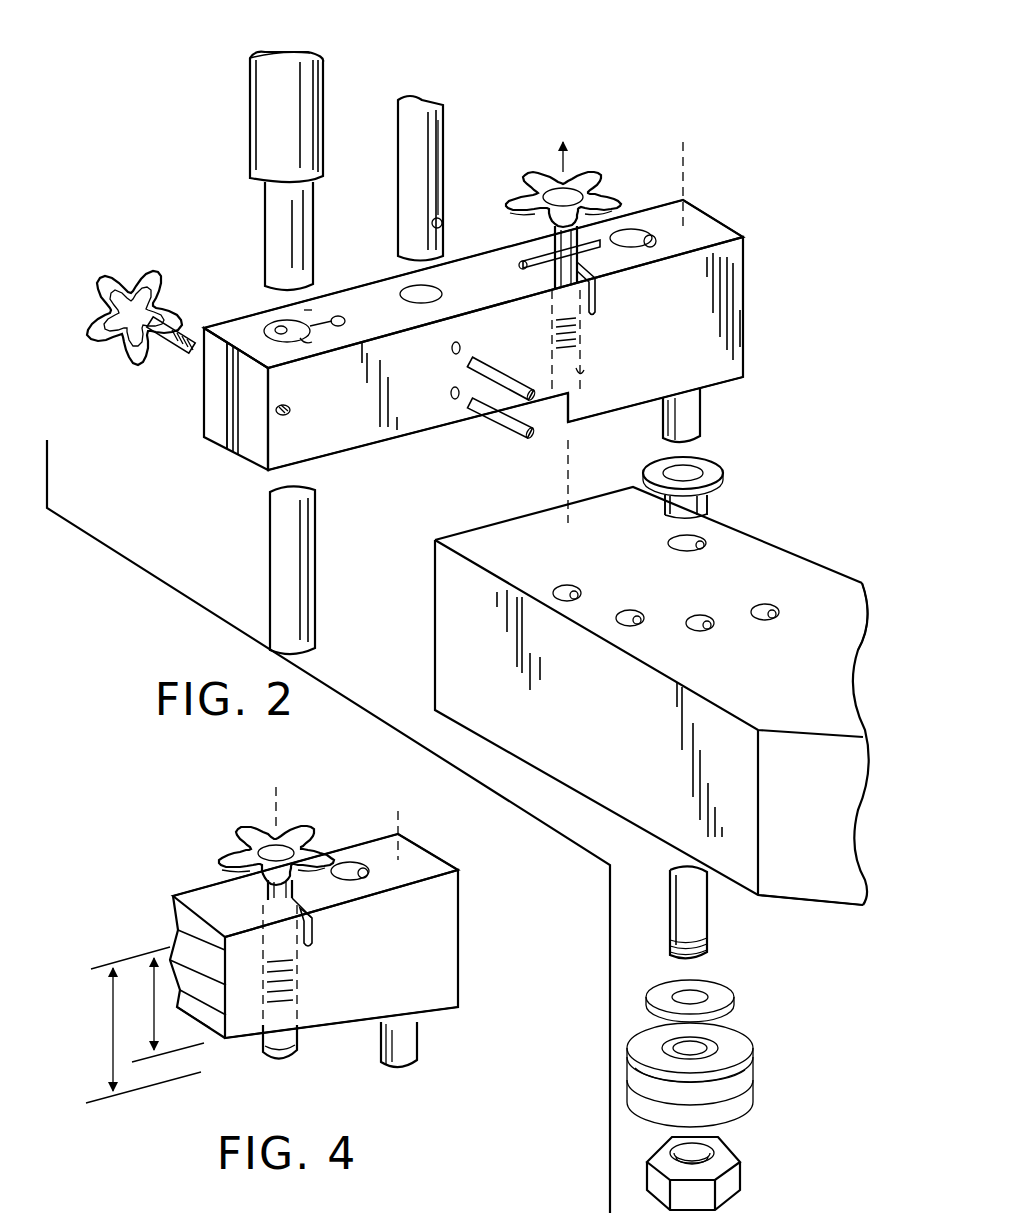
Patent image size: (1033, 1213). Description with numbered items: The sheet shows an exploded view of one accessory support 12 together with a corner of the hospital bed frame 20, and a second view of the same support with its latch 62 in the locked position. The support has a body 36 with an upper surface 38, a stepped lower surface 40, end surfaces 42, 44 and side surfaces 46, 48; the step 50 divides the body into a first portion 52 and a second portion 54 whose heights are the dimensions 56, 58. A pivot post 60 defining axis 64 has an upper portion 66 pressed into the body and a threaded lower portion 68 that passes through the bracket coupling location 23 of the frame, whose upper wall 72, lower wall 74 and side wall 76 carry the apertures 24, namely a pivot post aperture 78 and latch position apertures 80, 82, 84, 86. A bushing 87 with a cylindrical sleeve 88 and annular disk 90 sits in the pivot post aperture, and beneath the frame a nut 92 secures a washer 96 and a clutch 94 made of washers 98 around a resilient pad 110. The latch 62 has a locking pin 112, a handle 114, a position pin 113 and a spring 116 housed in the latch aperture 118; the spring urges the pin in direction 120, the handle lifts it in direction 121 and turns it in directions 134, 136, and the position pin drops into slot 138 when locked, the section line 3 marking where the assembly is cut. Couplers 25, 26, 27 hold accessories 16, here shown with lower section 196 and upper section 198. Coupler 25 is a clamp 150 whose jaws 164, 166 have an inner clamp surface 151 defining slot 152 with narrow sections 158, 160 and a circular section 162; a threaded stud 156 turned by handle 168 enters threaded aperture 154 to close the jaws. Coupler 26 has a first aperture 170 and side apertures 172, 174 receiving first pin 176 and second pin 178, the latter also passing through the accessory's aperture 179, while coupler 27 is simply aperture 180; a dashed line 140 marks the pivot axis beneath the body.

In FIG. 2, the section line 3- 3 is at (178, 362).
In FIG. 2, the accessory support 12 is at (697, 72).
In FIG. 4, the accessory support 12 is at (493, 937).
In FIG. 2, the accessory 16 is at (318, 118).
In FIG. 2, the frame 20 is at (822, 487).
In FIG. 2, the bracket coupling location 23 is at (857, 577).
In FIG. 2, the apertures 24 is at (707, 543).
In FIG. 2, the coupler 25 is at (225, 278).
In FIG. 2, the coupler 26 is at (386, 252).
In FIG. 2, the coupler 27 is at (637, 193).
In FIG. 4, the coupler 27 is at (355, 815).
In FIG. 2, the body 36 is at (673, 312).
In FIG. 4, the body 36 is at (428, 915).
In FIG. 2, the upper surface 38 is at (692, 207).
In FIG. 4, the upper surface 38 is at (192, 897).
In FIG. 2, the lower surface 40 is at (367, 425).
In FIG. 4, the lower surface 40 is at (256, 1031).
In FIG. 2, the end surface 42 is at (204, 437).
In FIG. 2, the end surface 44 is at (748, 237).
In FIG. 4, the end surface 44 is at (433, 853).
In FIG. 2, the side surface 46 is at (423, 422).
In FIG. 2, the side surface 48 is at (226, 324).
In FIG. 4, the side surface 48 is at (345, 844).
In FIG. 2, the step 50 is at (560, 412).
In FIG. 4, the step 50 is at (277, 1059).
In FIG. 2, the first portion 52 is at (607, 398).
In FIG. 4, the first portion 52 is at (445, 990).
In FIG. 2, the second portion 54 is at (474, 262).
In FIG. 4, the height dimension 56 is at (148, 983).
In FIG. 4, the height dimension 58 is at (113, 1031).
In FIG. 2, the pivot post 60 is at (695, 408).
In FIG. 4, the pivot post 60 is at (417, 1049).
In FIG. 2, the latch 62 is at (532, 148).
In FIG. 4, the latch 62 is at (239, 817).
In FIG. 2, the axis 64 is at (683, 148).
In FIG. 4, the axis 64 is at (398, 811).
In FIG. 2, the upper portion 66 is at (697, 420).
In FIG. 4, the upper portion 66 is at (381, 1062).
In FIG. 2, the threaded lower portion 68 is at (670, 943).
In FIG. 2, the upper wall 72 is at (487, 537).
In FIG. 2, the lower wall 74 is at (803, 902).
In FIG. 2, the side wall 76 is at (457, 670).
In FIG. 2, the pivot post aperture 78 is at (668, 545).
In FIG. 2, the first latch position aperture 80 is at (770, 624).
In FIG. 2, the second latch position aperture 82 is at (702, 620).
In FIG. 2, the third latch position aperture 84 is at (633, 615).
In FIG. 2, the fourth latch position aperture 86 is at (563, 587).
In FIG. 2, the bushing 87 is at (732, 472).
In FIG. 2, the cylindrical sleeve 88 is at (710, 502).
In FIG. 2, the annular disk 90 is at (660, 473).
In FIG. 2, the nut 92 is at (735, 1180).
In FIG. 2, the clutch 94 is at (773, 1065).
In FIG. 2, the washer 96 is at (727, 997).
In FIG. 2, the washers 98 is at (742, 1047).
In FIG. 2, the resilient pad 110 is at (747, 1077).
In FIG. 2, the locking pin 112 is at (553, 312).
In FIG. 4, the locking pin 112 is at (263, 936).
In FIG. 2, the position pin 113 is at (522, 266).
In FIG. 4, the position pin 113 is at (309, 922).
In FIG. 2, the handle 114 is at (592, 188).
In FIG. 4, the handle 114 is at (225, 851).
In FIG. 2, the spring 116 is at (590, 336).
In FIG. 4, the spring 116 is at (300, 980).
In FIG. 2, the latch aperture 118 is at (586, 370).
In FIG. 4, the direction 120 is at (278, 850).
In FIG. 2, the direction 121 is at (555, 160).
In FIG. 2, the direction 134 is at (653, 100).
In FIG. 2, the direction 136 is at (593, 95).
In FIG. 2, the slot 138 is at (596, 290).
In FIG. 4, the slot 138 is at (312, 925).
In FIG. 2, the axis line 140 is at (567, 468).
In FIG. 4, the axis line 140 is at (276, 805).
In FIG. 2, the clamp 150 is at (200, 511).
In FIG. 2, the inner clamp surface 151 is at (313, 313).
In FIG. 2, the slot 152 is at (234, 452).
In FIG. 2, the threaded aperture 154 is at (302, 412).
In FIG. 2, the threaded stud 156 is at (162, 358).
In FIG. 2, the first narrow section 158 is at (262, 347).
In FIG. 2, the second narrow section 160 is at (346, 322).
In FIG. 2, the circular section 162 is at (272, 325).
In FIG. 2, the first jaw 164 is at (308, 308).
In FIG. 2, the second jaw 166 is at (328, 477).
In FIG. 2, the handle 168 is at (118, 305).
In FIG. 2, the first aperture 170 is at (418, 302).
In FIG. 2, the second aperture 172 is at (458, 346).
In FIG. 2, the third aperture 174 is at (452, 391).
In FIG. 2, the first pin 176 is at (497, 432).
In FIG. 2, the second pin 178 is at (483, 366).
In FIG. 2, the aperture 179 is at (433, 222).
In FIG. 2, the aperture 180 is at (656, 240).
In FIG. 4, the aperture 180 is at (362, 875).
In FIG. 2, the post lower section 196 is at (268, 208).
In FIG. 2, the post upper section 198 is at (265, 101).